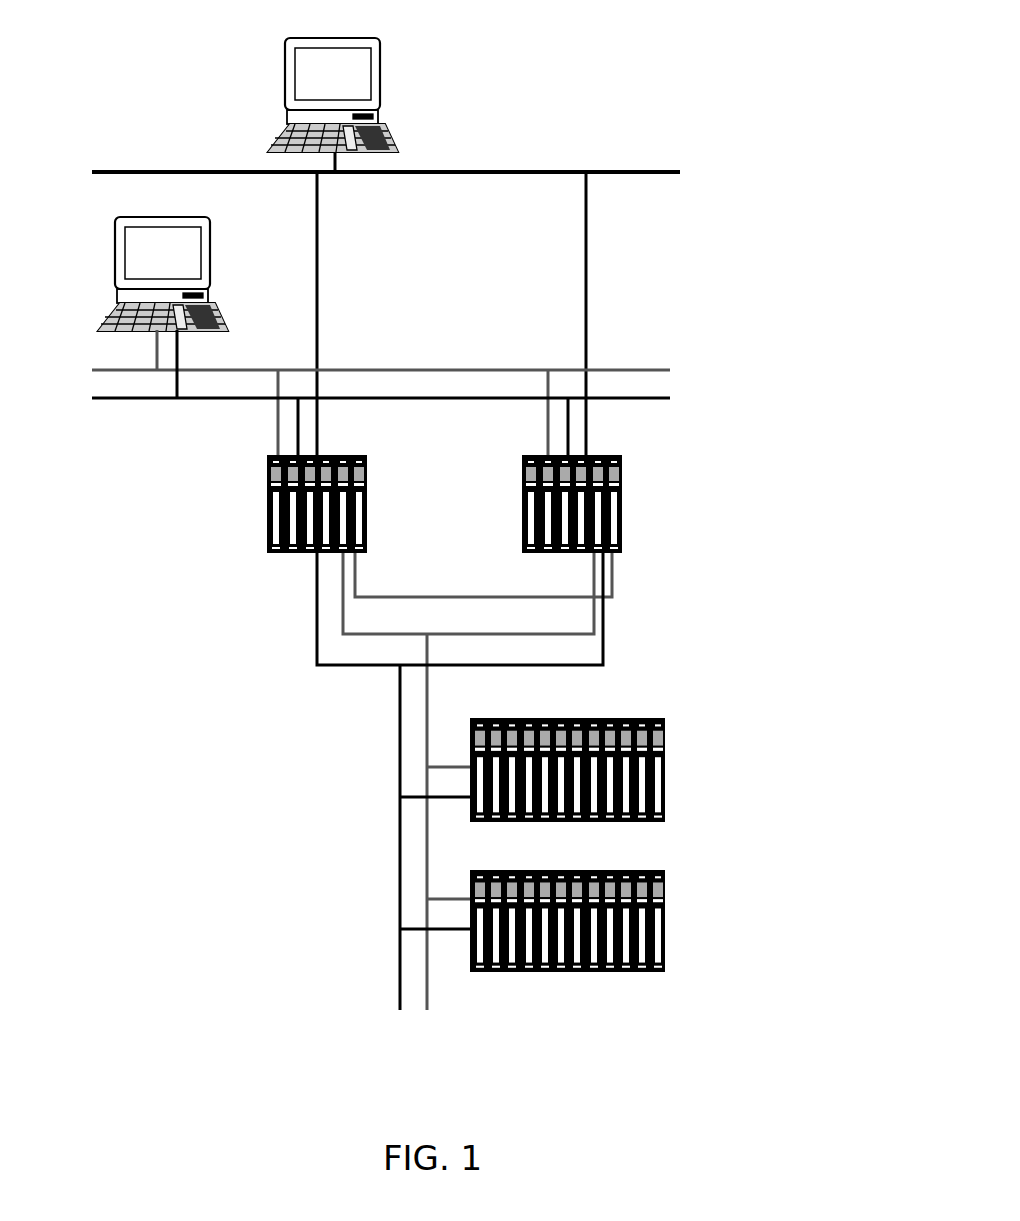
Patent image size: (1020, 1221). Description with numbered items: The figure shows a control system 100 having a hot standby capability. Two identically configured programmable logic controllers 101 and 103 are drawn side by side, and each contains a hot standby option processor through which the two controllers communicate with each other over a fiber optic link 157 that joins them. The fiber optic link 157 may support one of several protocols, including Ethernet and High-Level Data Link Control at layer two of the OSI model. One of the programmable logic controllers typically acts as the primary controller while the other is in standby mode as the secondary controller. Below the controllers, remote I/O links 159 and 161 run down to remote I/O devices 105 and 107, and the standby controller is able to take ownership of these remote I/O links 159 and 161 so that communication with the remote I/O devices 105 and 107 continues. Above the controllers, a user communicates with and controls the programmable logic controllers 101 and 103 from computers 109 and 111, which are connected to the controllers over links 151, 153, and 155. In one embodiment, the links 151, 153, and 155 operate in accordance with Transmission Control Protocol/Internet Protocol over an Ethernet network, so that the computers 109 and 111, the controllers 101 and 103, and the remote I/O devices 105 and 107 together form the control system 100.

The control system 100 is at (720, 38).
The programmable logic controller 101 is at (275, 558).
The programmable logic controller 103 is at (520, 457).
The remote I/O device 105 is at (668, 765).
The remote I/O device 107 is at (668, 920).
The computer 109 is at (382, 94).
The computer 111 is at (212, 266).
The link 151 is at (497, 166).
The link 153 is at (428, 368).
The link 155 is at (150, 406).
The fiber optic link 157 is at (485, 584).
The remote I/O link 159 is at (429, 724).
The remote I/O link 161 is at (396, 772).